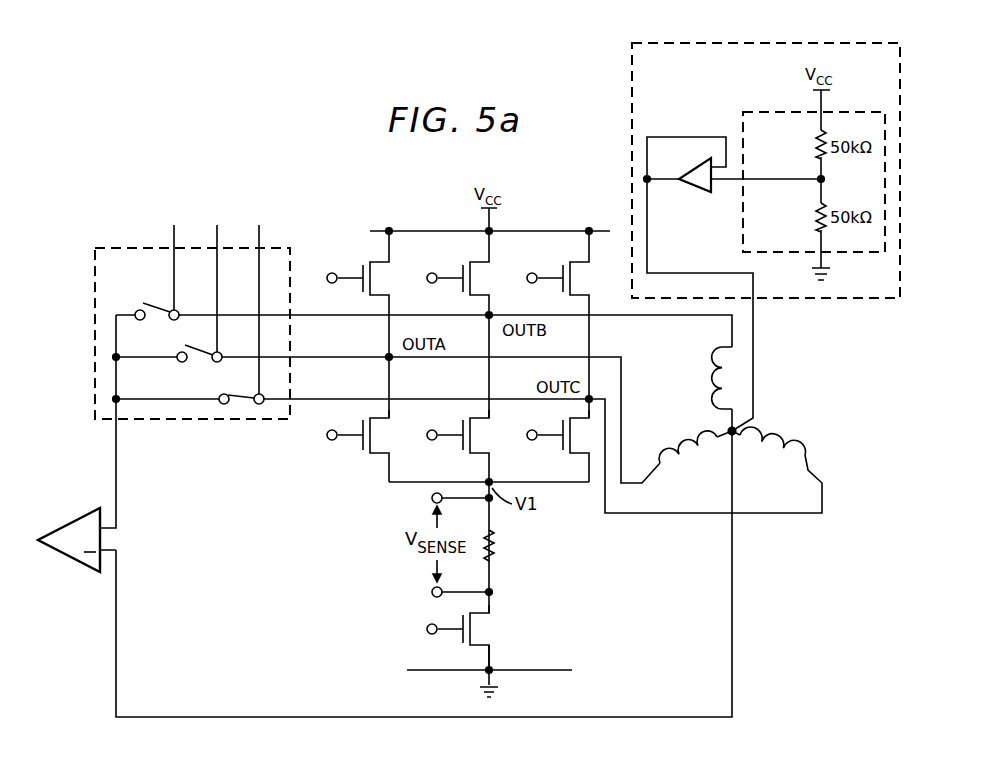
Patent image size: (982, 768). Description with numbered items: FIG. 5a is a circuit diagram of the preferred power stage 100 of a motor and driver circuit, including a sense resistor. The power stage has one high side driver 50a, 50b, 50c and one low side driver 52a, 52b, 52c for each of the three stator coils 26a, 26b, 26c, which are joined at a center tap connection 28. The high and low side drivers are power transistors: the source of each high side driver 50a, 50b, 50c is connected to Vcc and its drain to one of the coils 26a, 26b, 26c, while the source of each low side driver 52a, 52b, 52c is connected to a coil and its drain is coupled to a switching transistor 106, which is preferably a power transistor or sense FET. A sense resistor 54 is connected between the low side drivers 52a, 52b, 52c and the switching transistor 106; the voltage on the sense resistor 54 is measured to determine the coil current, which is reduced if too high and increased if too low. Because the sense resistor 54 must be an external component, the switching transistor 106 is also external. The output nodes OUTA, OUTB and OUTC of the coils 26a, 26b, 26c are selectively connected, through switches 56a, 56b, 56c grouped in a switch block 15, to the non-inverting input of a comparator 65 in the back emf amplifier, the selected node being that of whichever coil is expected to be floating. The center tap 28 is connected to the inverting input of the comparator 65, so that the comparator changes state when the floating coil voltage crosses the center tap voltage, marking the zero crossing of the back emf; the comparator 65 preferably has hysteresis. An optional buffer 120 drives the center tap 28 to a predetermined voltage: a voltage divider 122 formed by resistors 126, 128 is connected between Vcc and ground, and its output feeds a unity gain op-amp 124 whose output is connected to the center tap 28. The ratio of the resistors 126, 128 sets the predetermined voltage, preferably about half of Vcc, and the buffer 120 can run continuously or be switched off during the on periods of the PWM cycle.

The switch network 15 is at (95, 309).
The switch 56a is at (164, 310).
The switch 56b is at (197, 349).
The switch 56c is at (243, 396).
The high side driver 50a is at (362, 268).
The high side driver 50b is at (462, 268).
The high side driver 50c is at (562, 268).
The low side driver 52a is at (360, 446).
The low side driver 52b is at (460, 446).
The low side driver 52c is at (560, 446).
The sense resistor 54 is at (497, 538).
The switching transistor 106 is at (460, 640).
The power stage 100 is at (364, 546).
The comparator 65 is at (66, 560).
The stator coil 26a is at (686, 440).
The stator coil 26b is at (718, 370).
The stator coil 26c is at (805, 455).
The center tap connection 28 is at (738, 440).
The buffer 120 is at (705, 94).
The voltage divider 122 is at (768, 112).
The unity gain op-amp 124 is at (695, 193).
The resistor 126 is at (814, 150).
The resistor 128 is at (814, 213).